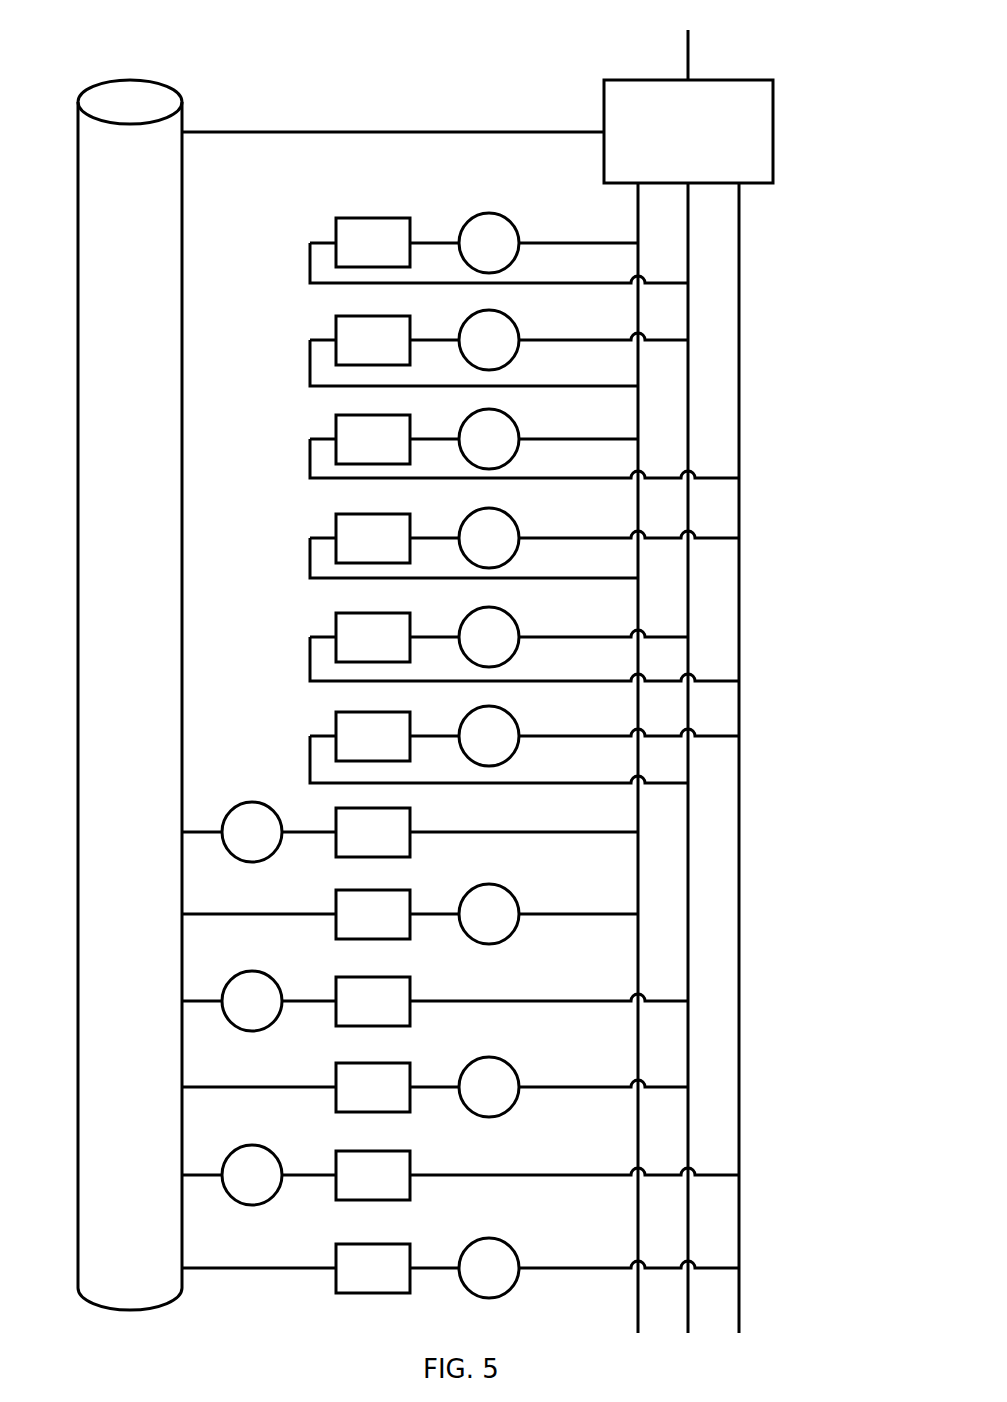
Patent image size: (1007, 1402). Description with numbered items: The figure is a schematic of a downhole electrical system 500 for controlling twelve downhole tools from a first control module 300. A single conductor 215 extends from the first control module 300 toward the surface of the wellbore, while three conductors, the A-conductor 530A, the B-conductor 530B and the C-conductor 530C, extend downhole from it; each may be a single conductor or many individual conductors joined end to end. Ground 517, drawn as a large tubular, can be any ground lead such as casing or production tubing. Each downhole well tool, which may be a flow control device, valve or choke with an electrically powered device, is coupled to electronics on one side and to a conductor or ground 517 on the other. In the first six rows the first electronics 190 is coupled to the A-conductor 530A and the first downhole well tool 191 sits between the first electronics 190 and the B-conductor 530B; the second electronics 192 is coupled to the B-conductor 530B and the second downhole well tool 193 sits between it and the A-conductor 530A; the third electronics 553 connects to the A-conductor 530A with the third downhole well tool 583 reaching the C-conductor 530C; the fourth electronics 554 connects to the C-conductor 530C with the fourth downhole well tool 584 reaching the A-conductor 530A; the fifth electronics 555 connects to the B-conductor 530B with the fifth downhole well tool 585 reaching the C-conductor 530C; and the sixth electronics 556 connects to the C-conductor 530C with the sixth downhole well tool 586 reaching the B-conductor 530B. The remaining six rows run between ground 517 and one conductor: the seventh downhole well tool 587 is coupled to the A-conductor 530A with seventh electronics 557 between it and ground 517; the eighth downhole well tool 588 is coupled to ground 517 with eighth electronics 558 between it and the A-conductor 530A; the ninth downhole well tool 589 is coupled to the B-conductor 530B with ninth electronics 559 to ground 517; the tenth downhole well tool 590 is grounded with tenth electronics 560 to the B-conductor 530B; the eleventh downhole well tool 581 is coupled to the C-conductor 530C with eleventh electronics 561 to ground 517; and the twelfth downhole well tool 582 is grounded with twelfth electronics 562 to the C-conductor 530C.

The downhole electrical system 500 is at (140, 34).
The ground 517 is at (112, 707).
The first control module 300 is at (670, 146).
The single conductor 215 is at (688, 56).
The A-conductor 530A is at (637, 206).
The B-conductor 530B is at (689, 230).
The C-conductor 530C is at (740, 297).
The first downhole well tool 191 is at (355, 256).
The first electronics 190 is at (471, 256).
The second downhole well tool 193 is at (355, 353).
The second electronics 192 is at (471, 353).
The third downhole well tool 583 is at (355, 452).
The third electronics 553 is at (471, 452).
The fourth downhole well tool 584 is at (355, 551).
The fourth electronics 554 is at (471, 551).
The fifth downhole well tool 585 is at (355, 650).
The fifth electronics 555 is at (471, 650).
The sixth downhole well tool 586 is at (355, 749).
The sixth electronics 556 is at (471, 749).
The seventh electronics 557 is at (234, 845).
The seventh downhole well tool 587 is at (355, 845).
The eighth downhole well tool 588 is at (355, 927).
The eighth electronics 558 is at (471, 927).
The ninth electronics 559 is at (234, 1014).
The ninth downhole well tool 589 is at (355, 1014).
The tenth downhole well tool 590 is at (355, 1100).
The tenth electronics 560 is at (471, 1100).
The eleventh electronics 561 is at (234, 1188).
The eleventh downhole well tool 581 is at (355, 1188).
The twelfth downhole well tool 582 is at (355, 1281).
The twelfth electronics 562 is at (471, 1281).